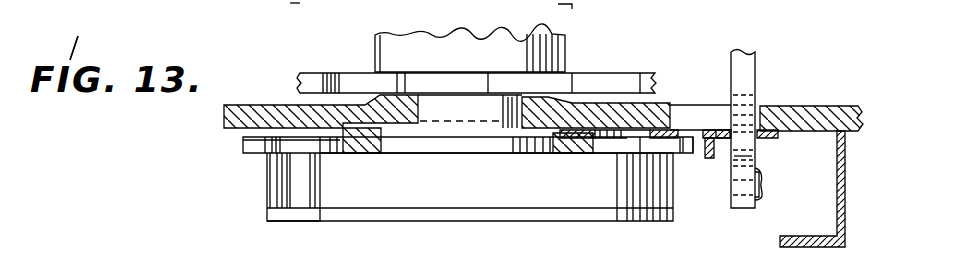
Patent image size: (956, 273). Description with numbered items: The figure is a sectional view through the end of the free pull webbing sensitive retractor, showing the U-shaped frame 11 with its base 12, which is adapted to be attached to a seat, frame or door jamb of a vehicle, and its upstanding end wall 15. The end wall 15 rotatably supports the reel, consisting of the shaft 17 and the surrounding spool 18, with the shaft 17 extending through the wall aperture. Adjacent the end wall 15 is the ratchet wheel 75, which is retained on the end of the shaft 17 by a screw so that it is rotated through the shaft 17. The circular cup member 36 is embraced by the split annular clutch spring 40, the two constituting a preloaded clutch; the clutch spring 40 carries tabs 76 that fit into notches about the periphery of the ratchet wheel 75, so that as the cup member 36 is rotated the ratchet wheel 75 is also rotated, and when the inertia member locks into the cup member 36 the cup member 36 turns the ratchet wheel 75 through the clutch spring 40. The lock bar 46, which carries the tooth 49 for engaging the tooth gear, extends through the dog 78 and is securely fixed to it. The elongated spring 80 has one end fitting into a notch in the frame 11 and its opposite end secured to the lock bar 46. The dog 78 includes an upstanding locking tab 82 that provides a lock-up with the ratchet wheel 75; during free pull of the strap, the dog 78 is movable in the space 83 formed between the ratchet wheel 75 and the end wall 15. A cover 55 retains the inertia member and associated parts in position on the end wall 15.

The frame 11 is at (579, 9).
The base 12 is at (283, 6).
The end wall 15 is at (228, 116).
The shaft 17 is at (480, 113).
The spool 18 is at (436, 46).
The cup member 36 is at (643, 221).
The clutch spring 40 is at (563, 195).
The lock bar 46 is at (752, 158).
The tooth 49 is at (748, 68).
The cover 55 is at (845, 227).
The ratchet wheel 75 is at (349, 79).
The tabs 76 is at (313, 212).
The dog 78 is at (722, 135).
The elongated spring 80 is at (758, 200).
The locking tab 82 is at (707, 162).
The space 83 is at (638, 133).